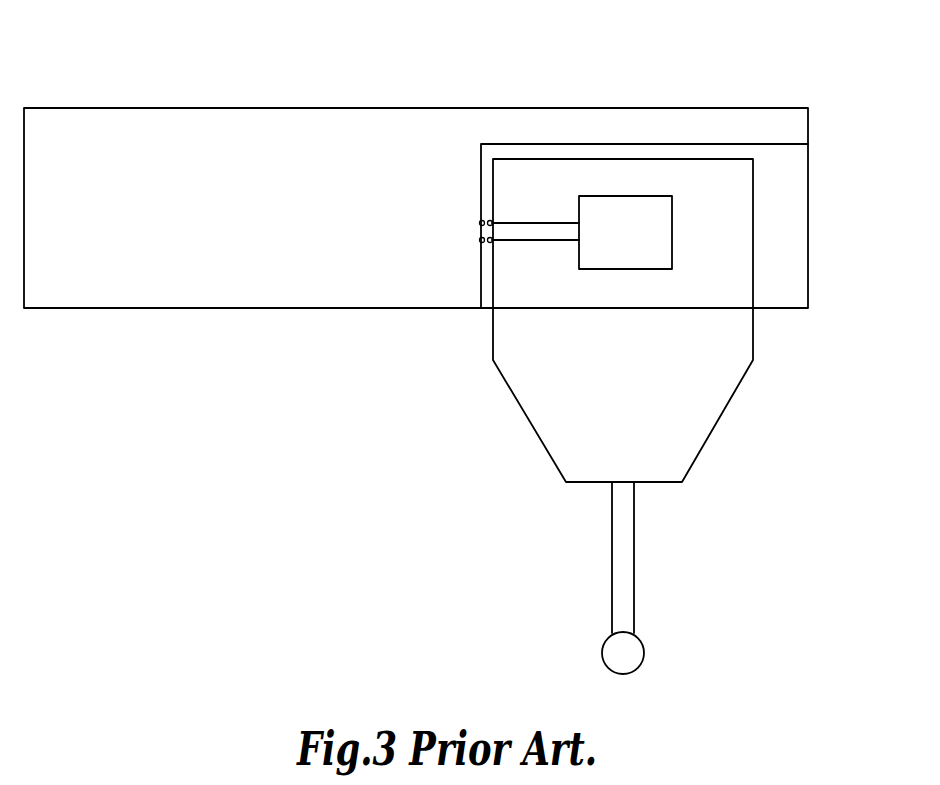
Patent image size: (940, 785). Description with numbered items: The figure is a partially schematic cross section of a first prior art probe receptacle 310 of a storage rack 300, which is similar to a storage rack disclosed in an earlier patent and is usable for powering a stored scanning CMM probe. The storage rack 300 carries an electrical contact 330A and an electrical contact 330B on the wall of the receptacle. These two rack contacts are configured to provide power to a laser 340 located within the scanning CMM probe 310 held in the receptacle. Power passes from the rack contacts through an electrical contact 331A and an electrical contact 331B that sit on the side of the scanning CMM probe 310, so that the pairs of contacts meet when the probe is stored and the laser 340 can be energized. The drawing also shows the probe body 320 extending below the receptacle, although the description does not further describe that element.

The storage rack 300 is at (793, 53).
The probe receptacle 310 is at (820, 212).
The probe body with stylus 320 is at (753, 335).
The electrical contact 330A is at (480, 221).
The electrical contact 330B is at (480, 238).
The electrical contact 331A is at (492, 226).
The electrical contact 331B is at (493, 242).
The laser 340 is at (640, 196).